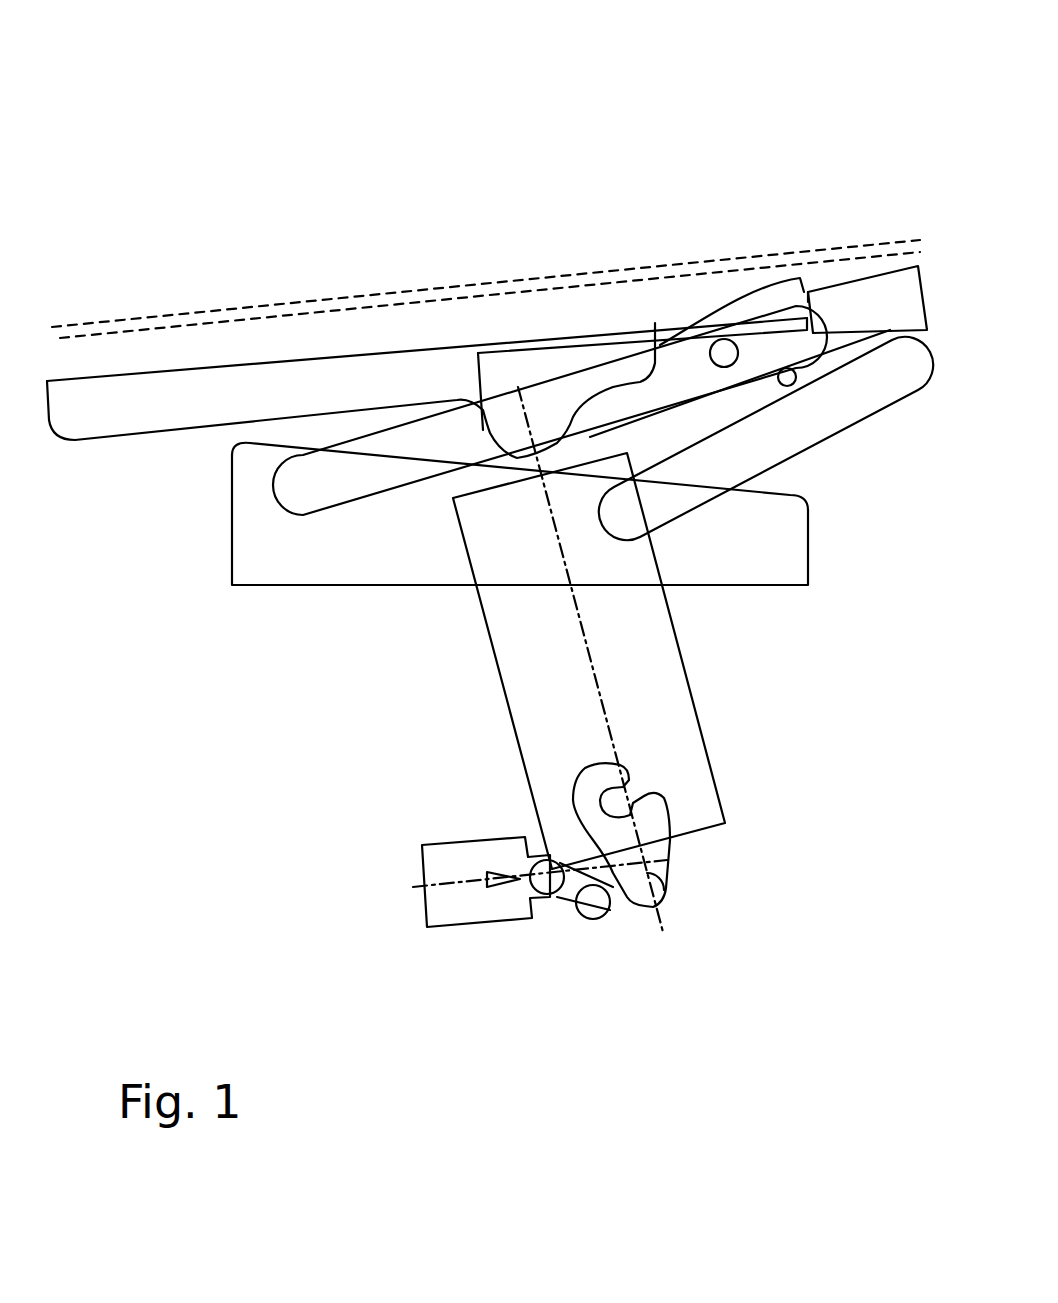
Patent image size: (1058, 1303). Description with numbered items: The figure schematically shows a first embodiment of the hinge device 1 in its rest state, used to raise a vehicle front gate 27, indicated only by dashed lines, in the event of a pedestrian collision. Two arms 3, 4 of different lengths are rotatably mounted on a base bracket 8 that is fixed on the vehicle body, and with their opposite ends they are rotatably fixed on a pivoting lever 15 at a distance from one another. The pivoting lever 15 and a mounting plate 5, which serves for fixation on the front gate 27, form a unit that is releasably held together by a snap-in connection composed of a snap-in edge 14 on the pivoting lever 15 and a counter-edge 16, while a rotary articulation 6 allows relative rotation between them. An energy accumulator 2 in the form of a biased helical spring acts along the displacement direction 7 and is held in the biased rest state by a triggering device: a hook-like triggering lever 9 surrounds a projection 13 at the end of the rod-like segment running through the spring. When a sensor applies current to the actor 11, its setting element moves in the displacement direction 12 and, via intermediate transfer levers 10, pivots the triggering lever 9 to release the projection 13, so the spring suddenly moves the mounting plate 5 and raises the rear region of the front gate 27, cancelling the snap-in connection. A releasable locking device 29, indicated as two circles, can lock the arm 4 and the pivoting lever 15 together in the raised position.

The hinge device 1 is at (243, 286).
The energy accumulator 2 is at (668, 712).
The arm 3 is at (790, 437).
The arm 4 is at (322, 482).
The mounting plate 5 is at (358, 380).
The rotary articulation 6 is at (532, 410).
The displacement direction 7 is at (580, 650).
The base bracket 8 is at (745, 565).
The triggering lever 9 is at (650, 832).
The transfer levers 10 is at (567, 903).
The actor 11 is at (480, 903).
The displacement direction 12 is at (423, 888).
The projection 13 is at (627, 803).
The snap-in edge 14 is at (881, 300).
The pivoting lever 15 is at (800, 292).
The counter-edge 16 is at (790, 320).
The front gate 27 is at (127, 322).
The locking device 29 is at (787, 372).